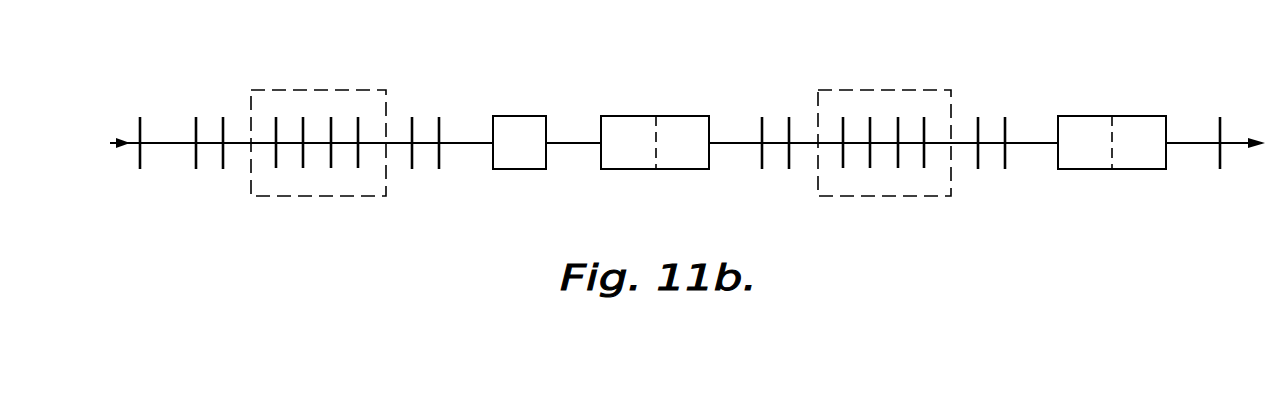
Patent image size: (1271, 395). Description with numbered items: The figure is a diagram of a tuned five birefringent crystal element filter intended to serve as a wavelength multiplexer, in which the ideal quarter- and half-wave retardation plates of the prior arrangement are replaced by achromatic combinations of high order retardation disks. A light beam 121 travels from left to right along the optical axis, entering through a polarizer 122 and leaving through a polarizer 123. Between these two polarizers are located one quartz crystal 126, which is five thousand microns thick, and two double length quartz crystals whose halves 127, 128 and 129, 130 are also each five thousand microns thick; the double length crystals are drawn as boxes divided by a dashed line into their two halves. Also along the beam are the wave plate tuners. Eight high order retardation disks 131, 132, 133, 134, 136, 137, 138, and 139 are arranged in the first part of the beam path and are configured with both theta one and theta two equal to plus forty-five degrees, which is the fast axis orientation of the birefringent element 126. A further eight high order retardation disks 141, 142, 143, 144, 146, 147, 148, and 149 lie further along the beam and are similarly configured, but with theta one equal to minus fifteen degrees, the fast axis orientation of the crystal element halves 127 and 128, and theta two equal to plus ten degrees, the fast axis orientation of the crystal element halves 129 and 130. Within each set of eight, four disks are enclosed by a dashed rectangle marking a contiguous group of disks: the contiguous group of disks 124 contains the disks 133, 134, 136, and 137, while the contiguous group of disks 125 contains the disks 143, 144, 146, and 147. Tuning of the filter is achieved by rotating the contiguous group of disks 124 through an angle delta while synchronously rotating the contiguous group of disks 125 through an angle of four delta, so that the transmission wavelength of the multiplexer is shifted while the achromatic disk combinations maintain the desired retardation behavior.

The light beam 121 is at (172, 146).
The polarizer 122 is at (139, 121).
The polarizer 123 is at (1219, 128).
The contiguous group of disks 124 is at (328, 90).
The contiguous group of disks 125 is at (897, 90).
The quartz crystal 126 is at (521, 116).
The quartz crystal half 127 is at (627, 116).
The quartz crystal half 128 is at (680, 116).
The quartz crystal half 129 is at (1084, 116).
The quartz crystal half 130 is at (1138, 116).
The high order retardation disk 131 is at (195, 122).
The high order retardation disk 132 is at (224, 122).
The high order retardation disk 133 is at (276, 163).
The high order retardation disk 134 is at (303, 163).
The high order retardation disk 136 is at (331, 163).
The high order retardation disk 137 is at (358, 163).
The high order retardation disk 138 is at (411, 122).
The high order retardation disk 139 is at (440, 122).
The high order retardation disk 141 is at (761, 122).
The high order retardation disk 142 is at (790, 122).
The high order retardation disk 143 is at (843, 163).
The high order retardation disk 144 is at (870, 163).
The high order retardation disk 146 is at (898, 163).
The high order retardation disk 147 is at (924, 163).
The high order retardation disk 148 is at (977, 122).
The high order retardation disk 149 is at (1006, 122).